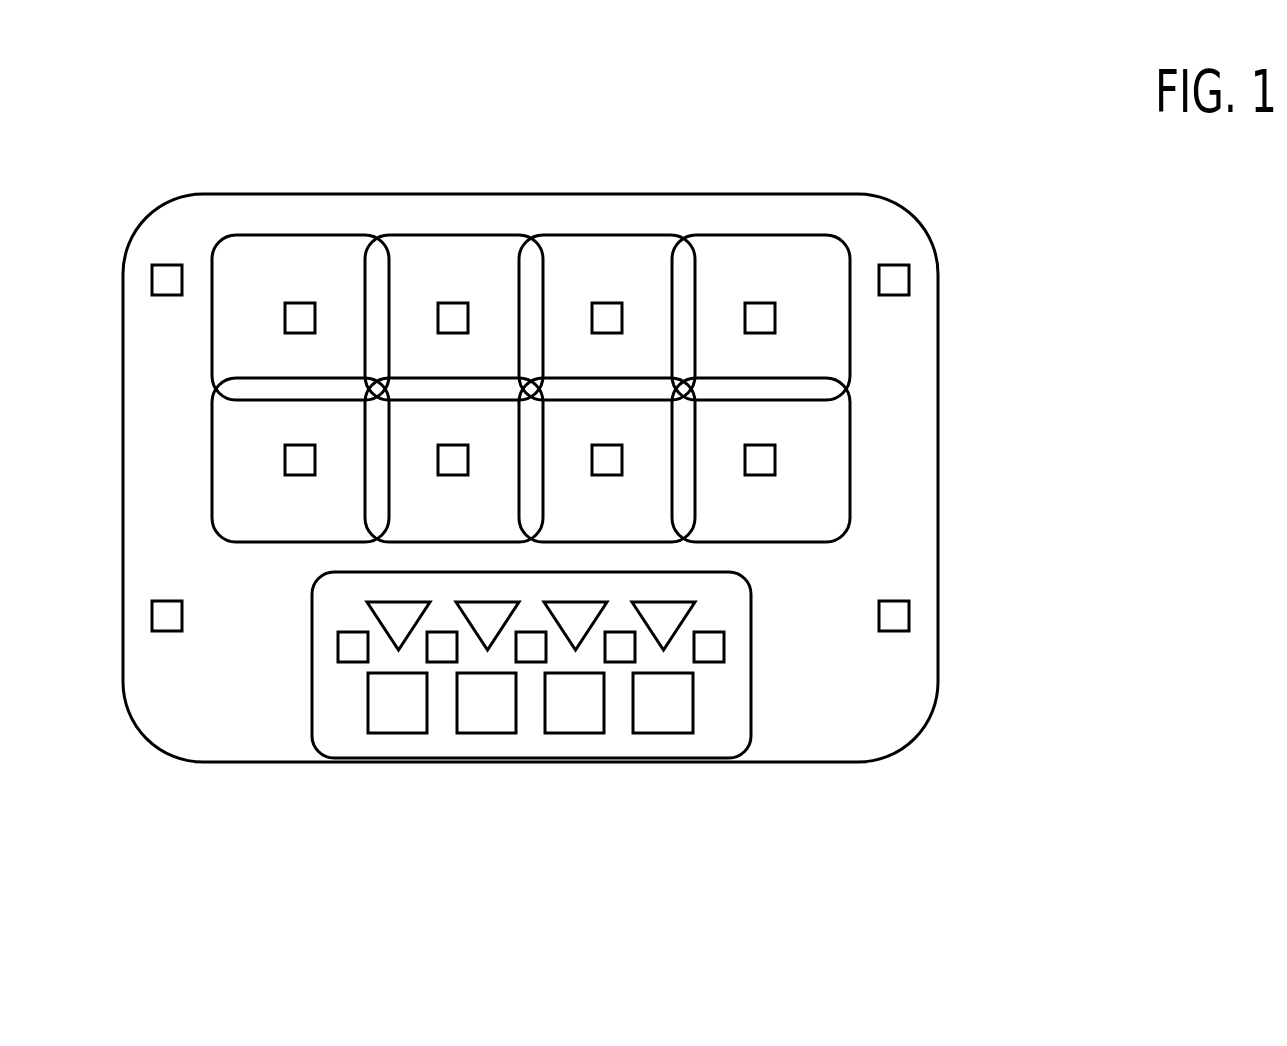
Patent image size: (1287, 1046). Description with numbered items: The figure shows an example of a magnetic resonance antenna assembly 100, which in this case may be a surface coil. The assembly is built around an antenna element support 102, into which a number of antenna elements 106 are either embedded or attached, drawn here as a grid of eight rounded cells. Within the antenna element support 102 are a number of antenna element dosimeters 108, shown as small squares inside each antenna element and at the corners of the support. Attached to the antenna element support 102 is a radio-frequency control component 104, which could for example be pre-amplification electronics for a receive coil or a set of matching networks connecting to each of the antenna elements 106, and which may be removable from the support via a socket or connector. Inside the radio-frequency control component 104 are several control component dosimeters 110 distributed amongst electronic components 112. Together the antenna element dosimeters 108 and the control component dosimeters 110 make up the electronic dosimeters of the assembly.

The magnetic resonance antenna assembly 100 is at (140, 200).
The antenna element support 102 is at (892, 235).
The radio-frequency control component 104 is at (310, 683).
The antenna elements 106 is at (460, 235).
The antenna element dosimeters 108 is at (285, 322).
The control component dosimeters 110 is at (350, 662).
The electronic components 112 is at (483, 602).